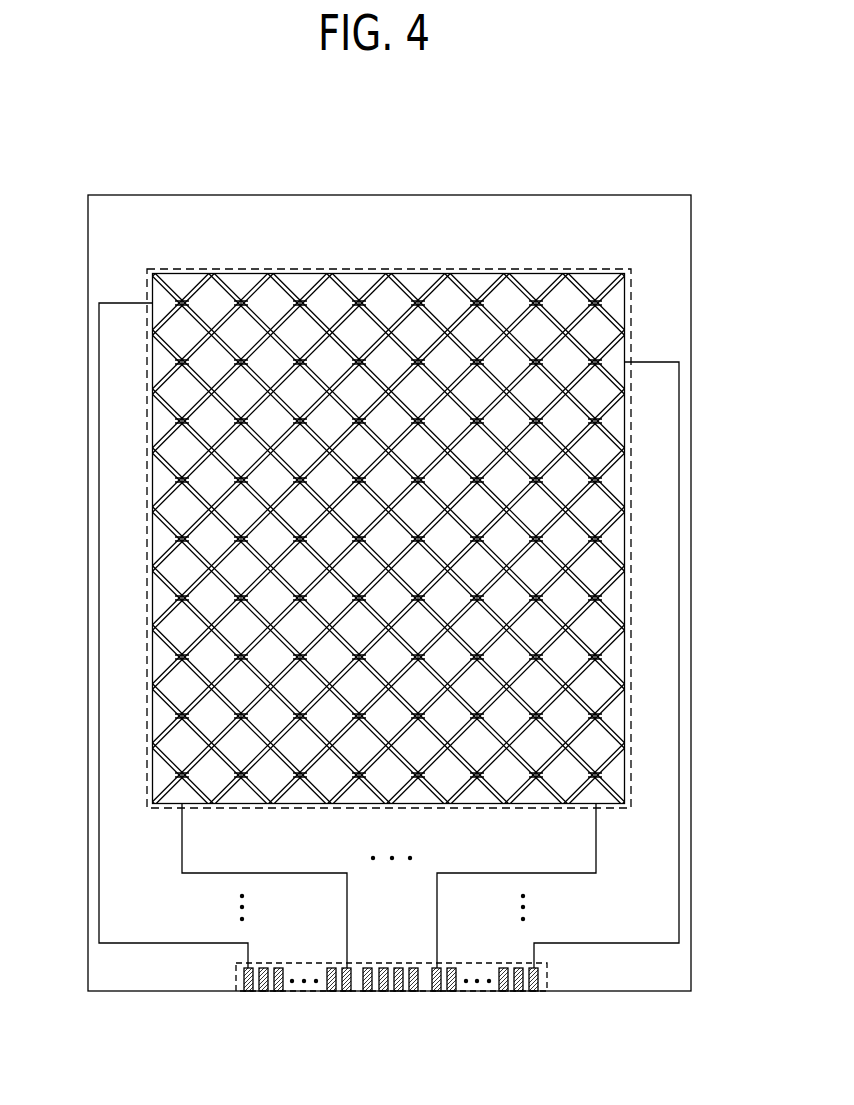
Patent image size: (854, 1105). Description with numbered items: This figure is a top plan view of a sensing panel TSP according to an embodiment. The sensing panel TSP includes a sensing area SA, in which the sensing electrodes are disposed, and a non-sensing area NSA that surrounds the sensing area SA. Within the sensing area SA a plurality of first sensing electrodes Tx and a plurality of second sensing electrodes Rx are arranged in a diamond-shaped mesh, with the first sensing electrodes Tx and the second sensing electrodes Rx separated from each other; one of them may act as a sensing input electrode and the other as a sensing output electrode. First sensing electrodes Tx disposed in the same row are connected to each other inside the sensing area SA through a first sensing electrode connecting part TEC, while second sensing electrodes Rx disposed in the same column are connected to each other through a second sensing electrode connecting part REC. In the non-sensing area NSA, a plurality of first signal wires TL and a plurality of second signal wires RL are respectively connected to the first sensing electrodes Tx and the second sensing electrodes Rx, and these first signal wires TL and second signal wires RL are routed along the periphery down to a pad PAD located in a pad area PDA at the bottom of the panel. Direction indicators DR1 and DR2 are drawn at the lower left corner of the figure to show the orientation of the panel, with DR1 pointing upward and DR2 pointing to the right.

The sensing panel TSP is at (683, 134).
The sensing area SA is at (551, 270).
The first sensing electrode Tx is at (508, 353).
The first sensing electrode connecting part TEC is at (538, 364).
The second sensing electrode Rx is at (595, 502).
The second sensing electrode connecting part REC is at (596, 538).
The non-sensing area NSA is at (667, 737).
The first signal wire TL is at (99, 790).
The second signal wire RL is at (183, 838).
The pad area PDA is at (236, 977).
The pad PAD is at (537, 992).
The first direction DR1 is at (47, 1032).
The second direction DR2 is at (47, 1032).